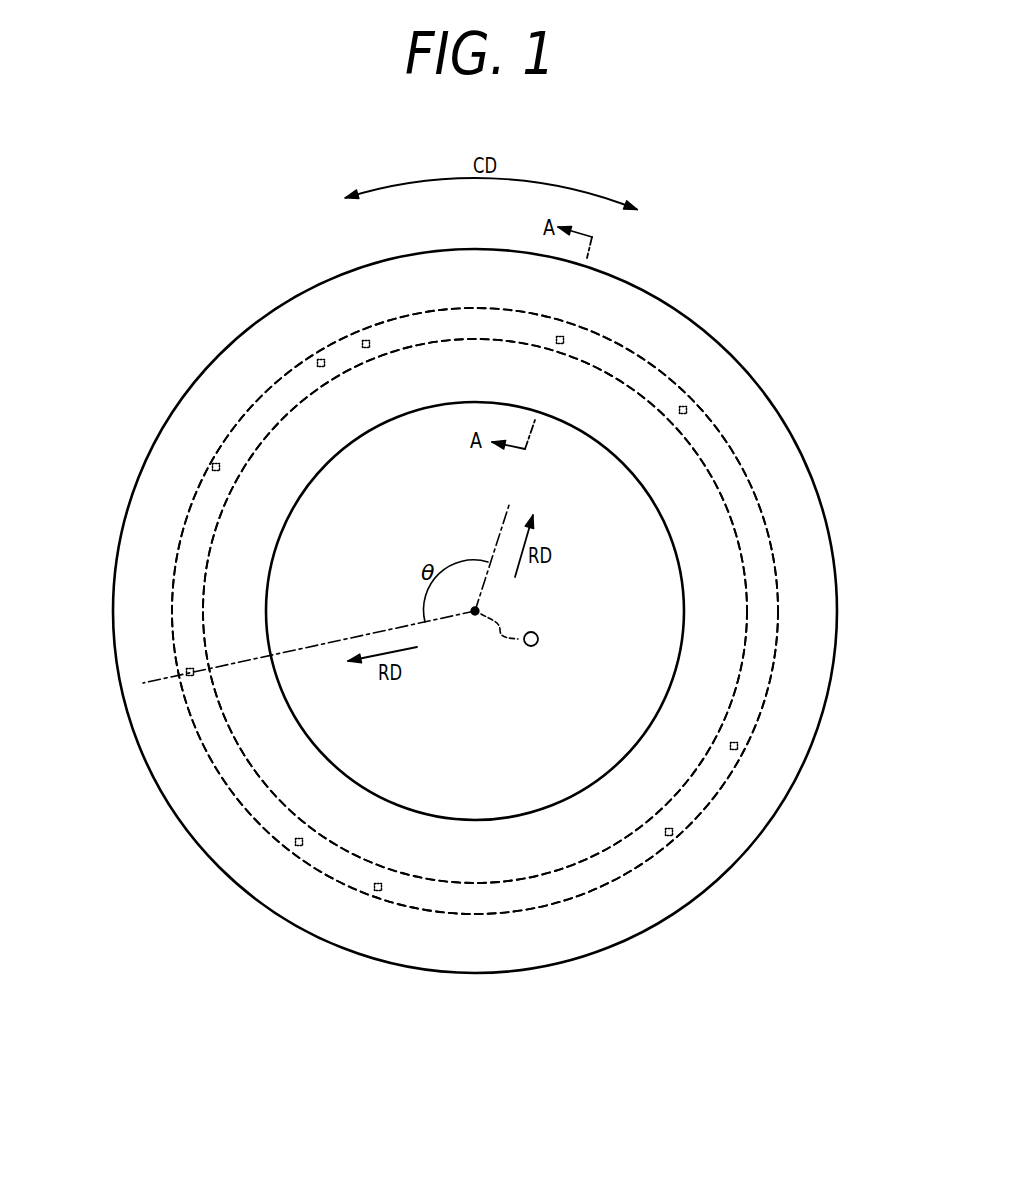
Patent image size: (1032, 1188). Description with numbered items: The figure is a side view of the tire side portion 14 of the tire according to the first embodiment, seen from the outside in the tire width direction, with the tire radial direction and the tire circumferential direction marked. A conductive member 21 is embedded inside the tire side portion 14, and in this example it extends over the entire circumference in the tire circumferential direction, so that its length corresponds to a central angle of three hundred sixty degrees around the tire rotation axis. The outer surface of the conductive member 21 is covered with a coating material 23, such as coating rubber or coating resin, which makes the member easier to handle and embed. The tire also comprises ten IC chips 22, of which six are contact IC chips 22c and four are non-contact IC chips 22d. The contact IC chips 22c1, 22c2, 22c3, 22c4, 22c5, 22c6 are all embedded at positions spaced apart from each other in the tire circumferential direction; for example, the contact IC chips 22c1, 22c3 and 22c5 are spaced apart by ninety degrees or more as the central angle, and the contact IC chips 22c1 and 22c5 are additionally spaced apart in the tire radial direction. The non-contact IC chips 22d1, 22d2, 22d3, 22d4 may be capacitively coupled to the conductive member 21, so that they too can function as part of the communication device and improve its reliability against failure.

The tire side portion 14 is at (303, 411).
The conductive member 21 is at (737, 484).
The coating material 23 is at (475, 611).
The IC chip 22 is at (474, 626).
The contact IC chip 22c is at (463, 636).
The non-contact IC chip 22d is at (511, 592).
The contact IC chip 22c1 is at (562, 338).
The contact IC chip 22c2 is at (215, 463).
The contact IC chip 22c3 is at (190, 678).
The contact IC chip 22c4 is at (375, 892).
The contact IC chip 22c5 is at (672, 838).
The contact IC chip 22c6 is at (684, 410).
The non-contact IC chip 22d1 is at (364, 344).
The non-contact IC chip 22d2 is at (320, 362).
The non-contact IC chip 22d3 is at (292, 845).
The non-contact IC chip 22d4 is at (740, 750).